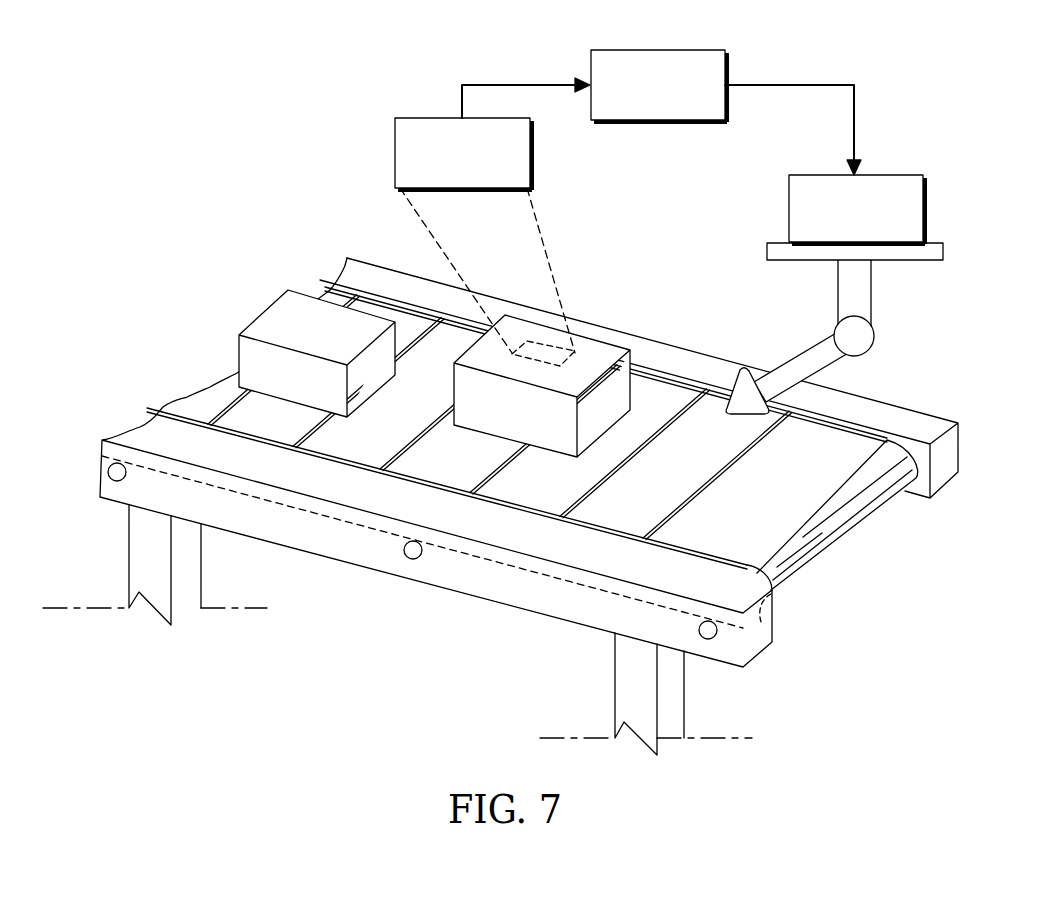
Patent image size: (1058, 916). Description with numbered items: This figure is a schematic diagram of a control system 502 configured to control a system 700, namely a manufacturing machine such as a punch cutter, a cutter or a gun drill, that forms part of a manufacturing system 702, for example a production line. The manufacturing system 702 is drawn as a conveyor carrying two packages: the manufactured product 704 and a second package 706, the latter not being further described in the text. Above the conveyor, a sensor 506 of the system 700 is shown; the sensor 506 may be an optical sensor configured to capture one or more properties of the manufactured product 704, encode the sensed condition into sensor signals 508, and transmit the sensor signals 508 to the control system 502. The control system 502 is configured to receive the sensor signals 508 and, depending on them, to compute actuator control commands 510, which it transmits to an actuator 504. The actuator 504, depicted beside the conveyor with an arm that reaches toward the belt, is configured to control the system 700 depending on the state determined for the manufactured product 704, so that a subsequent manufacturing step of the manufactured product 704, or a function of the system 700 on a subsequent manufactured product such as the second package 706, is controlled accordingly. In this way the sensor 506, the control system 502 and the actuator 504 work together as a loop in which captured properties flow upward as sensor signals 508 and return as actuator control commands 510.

The control system 502 is at (660, 50).
The actuator 504 is at (903, 173).
The sensor 506 is at (395, 153).
The sensor signals 508 is at (528, 83).
The actuator control commands 510 is at (790, 83).
The system (manufacturing machine) 700 is at (802, 350).
The manufacturing system 702 is at (843, 551).
The manufactured product 704 is at (588, 352).
The second package 706 is at (270, 320).